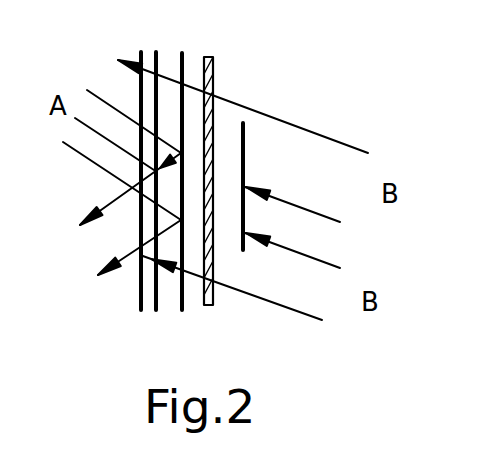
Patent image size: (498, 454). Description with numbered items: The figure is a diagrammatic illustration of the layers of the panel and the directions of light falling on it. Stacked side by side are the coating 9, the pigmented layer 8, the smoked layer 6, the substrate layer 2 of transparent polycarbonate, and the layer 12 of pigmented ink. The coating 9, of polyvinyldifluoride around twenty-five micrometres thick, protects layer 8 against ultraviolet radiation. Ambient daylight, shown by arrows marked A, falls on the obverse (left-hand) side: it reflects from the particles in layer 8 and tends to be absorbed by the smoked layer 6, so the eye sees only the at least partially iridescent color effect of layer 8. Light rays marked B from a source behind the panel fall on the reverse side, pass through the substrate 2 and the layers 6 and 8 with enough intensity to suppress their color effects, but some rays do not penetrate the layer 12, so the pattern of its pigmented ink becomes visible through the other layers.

The coating 9 is at (139, 92).
The layer 8 is at (154, 288).
The layer 6 is at (183, 62).
The substrate layer 2 is at (215, 80).
The layer 12 is at (245, 150).